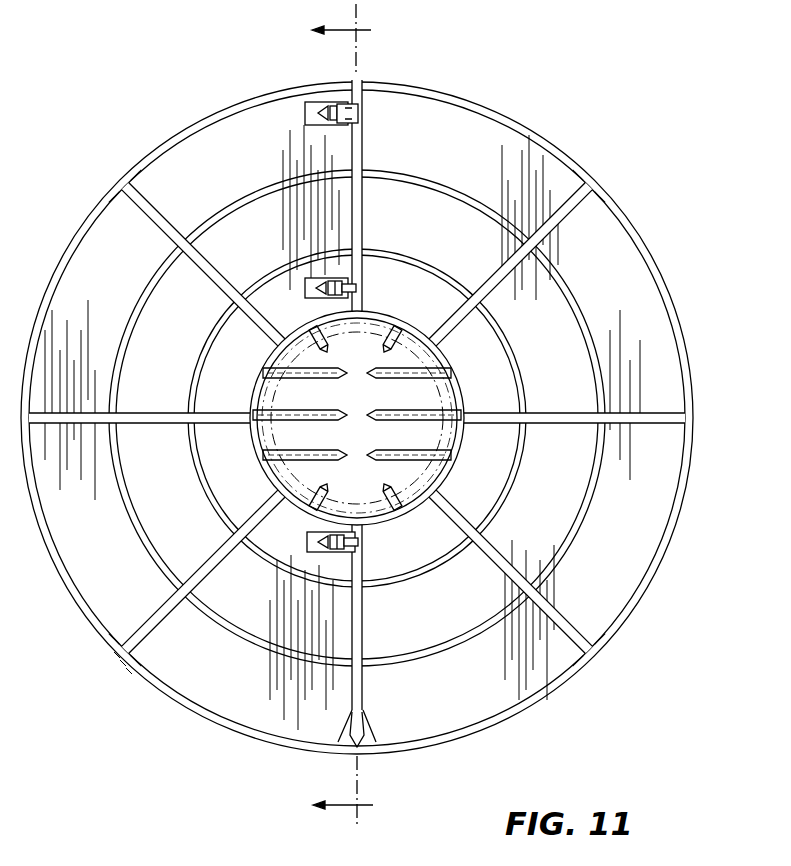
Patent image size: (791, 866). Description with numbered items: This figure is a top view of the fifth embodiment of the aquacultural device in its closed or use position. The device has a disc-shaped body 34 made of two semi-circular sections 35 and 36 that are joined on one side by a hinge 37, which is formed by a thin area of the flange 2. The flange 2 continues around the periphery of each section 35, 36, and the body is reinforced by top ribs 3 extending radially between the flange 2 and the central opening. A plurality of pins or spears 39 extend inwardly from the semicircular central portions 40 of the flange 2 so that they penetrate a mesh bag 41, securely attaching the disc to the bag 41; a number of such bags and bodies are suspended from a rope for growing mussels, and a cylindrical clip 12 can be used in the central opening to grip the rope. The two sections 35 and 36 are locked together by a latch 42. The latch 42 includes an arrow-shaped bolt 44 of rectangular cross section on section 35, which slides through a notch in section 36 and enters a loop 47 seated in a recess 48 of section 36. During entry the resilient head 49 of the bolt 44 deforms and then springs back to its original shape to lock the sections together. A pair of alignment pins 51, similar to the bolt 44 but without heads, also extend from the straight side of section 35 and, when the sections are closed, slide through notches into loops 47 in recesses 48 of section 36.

The flange 2 is at (673, 303).
The top ribs 3 is at (143, 195).
The cylindrical clip 12 is at (354, 421).
The disc-shaped body 34 is at (140, 684).
The semi-circular section 35 is at (528, 127).
The semi-circular section 36 is at (173, 135).
The hinge 37 is at (358, 750).
The pins or spears 39 is at (388, 350).
The semicircular central portions 40 is at (448, 350).
The mesh bag 41 is at (283, 390).
The latch 42 is at (380, 117).
The arrow-shaped bolt 44 is at (348, 115).
The loop 47 is at (332, 115).
The recess 48 is at (305, 115).
The resilient head 49 is at (317, 110).
The alignment pins 51 is at (348, 289).